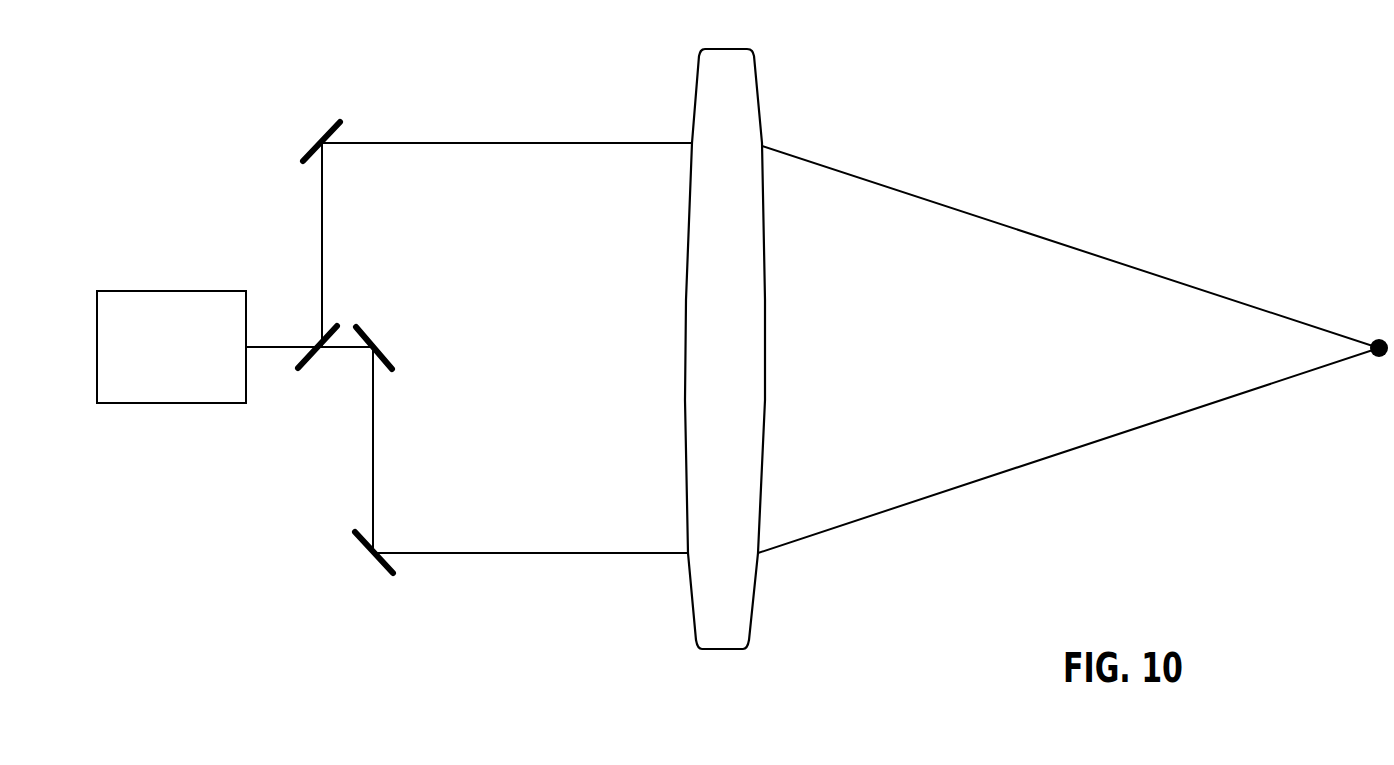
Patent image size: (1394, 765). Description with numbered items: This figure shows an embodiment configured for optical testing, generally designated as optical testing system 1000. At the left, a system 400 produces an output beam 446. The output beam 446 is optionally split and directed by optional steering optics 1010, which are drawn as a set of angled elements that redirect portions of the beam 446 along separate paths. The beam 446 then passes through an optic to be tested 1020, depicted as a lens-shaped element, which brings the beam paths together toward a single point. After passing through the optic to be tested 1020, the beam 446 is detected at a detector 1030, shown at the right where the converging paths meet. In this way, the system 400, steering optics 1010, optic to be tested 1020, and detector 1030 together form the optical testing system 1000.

The optical testing system 1000 is at (238, 532).
The system 400 is at (183, 291).
The output beam 446 is at (287, 348).
The steering optics 1010 is at (318, 343).
The optic to be tested 1020 is at (685, 313).
The detector 1030 is at (1378, 337).